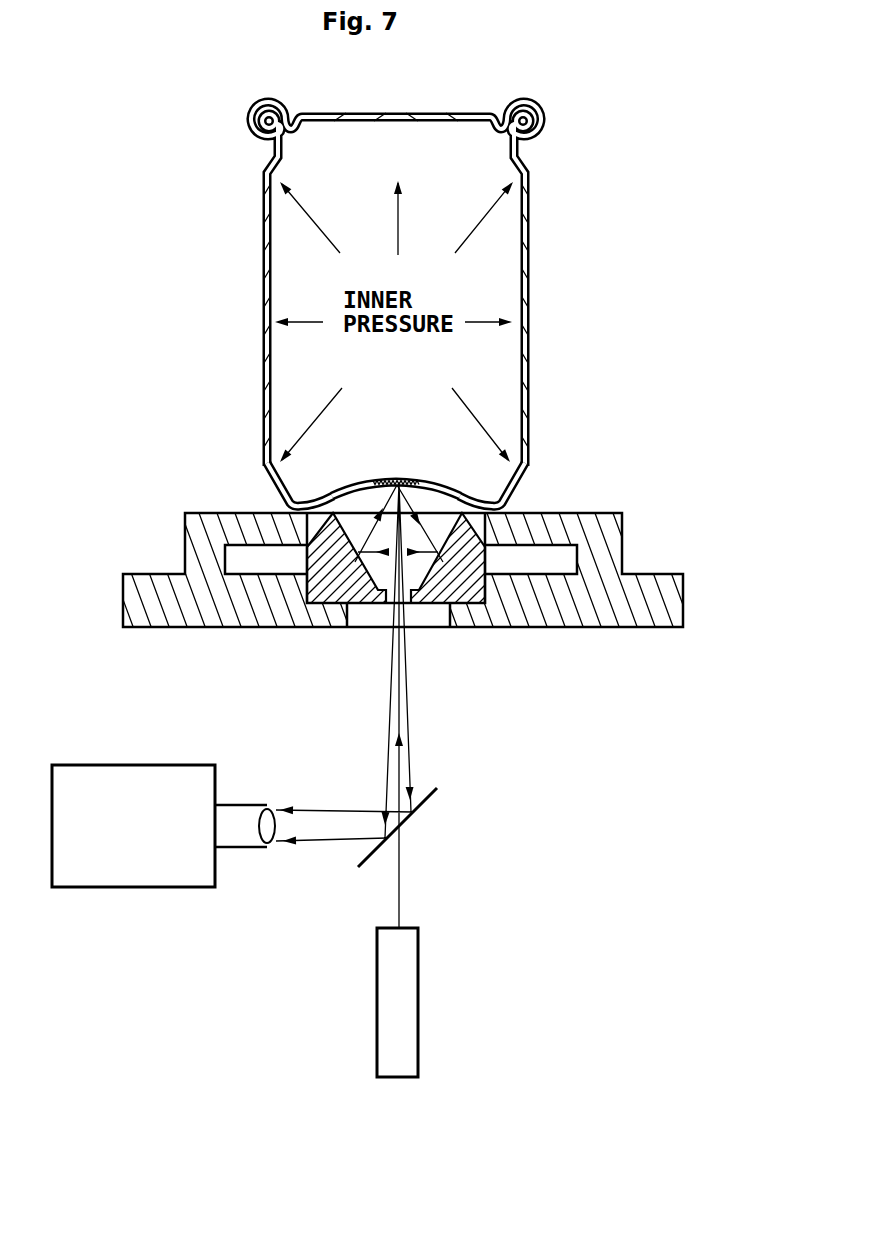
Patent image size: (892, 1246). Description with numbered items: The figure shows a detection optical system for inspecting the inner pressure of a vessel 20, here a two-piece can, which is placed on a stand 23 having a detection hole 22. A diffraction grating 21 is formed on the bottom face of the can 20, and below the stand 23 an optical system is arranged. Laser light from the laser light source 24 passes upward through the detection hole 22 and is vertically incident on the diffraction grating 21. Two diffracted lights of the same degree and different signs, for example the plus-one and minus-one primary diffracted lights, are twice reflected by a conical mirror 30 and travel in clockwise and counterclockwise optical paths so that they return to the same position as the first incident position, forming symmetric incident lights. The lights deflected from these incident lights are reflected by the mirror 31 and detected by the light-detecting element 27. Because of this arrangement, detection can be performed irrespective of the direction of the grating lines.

The vessel 20 is at (530, 390).
The diffraction grating 21 is at (413, 493).
The detection hole 22 is at (355, 528).
The stand 23 is at (648, 627).
The laser light source 24 is at (407, 1002).
The light-detecting element 27 is at (175, 873).
The conical mirror 30 is at (432, 627).
The mirror 31 is at (428, 802).